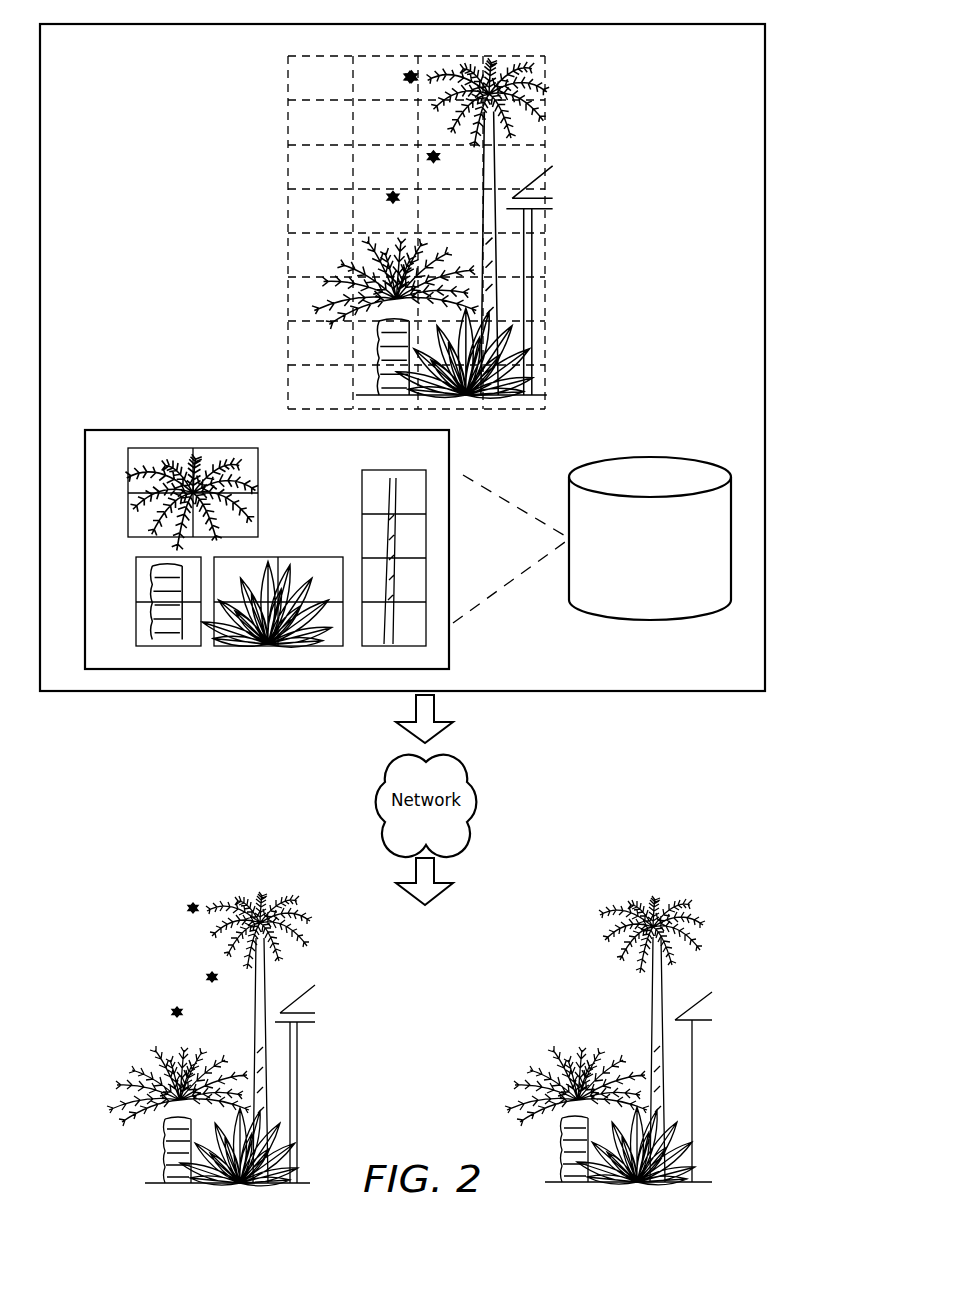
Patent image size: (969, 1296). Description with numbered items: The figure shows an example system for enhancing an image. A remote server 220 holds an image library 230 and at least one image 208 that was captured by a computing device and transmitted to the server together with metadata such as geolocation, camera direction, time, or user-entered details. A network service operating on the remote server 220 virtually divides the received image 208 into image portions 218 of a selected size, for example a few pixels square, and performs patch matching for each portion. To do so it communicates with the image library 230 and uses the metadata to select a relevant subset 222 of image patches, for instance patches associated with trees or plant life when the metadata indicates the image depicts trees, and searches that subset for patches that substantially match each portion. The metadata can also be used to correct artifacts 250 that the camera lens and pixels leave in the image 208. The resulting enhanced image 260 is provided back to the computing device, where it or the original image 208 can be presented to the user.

The remote server 220 is at (765, 62).
The image portions 218 is at (302, 172).
The image 208 is at (545, 125).
The artifacts 250 is at (407, 78).
The subset of image patches 222 is at (86, 431).
The image library 230 is at (707, 460).
The enhanced image 260 is at (710, 898).